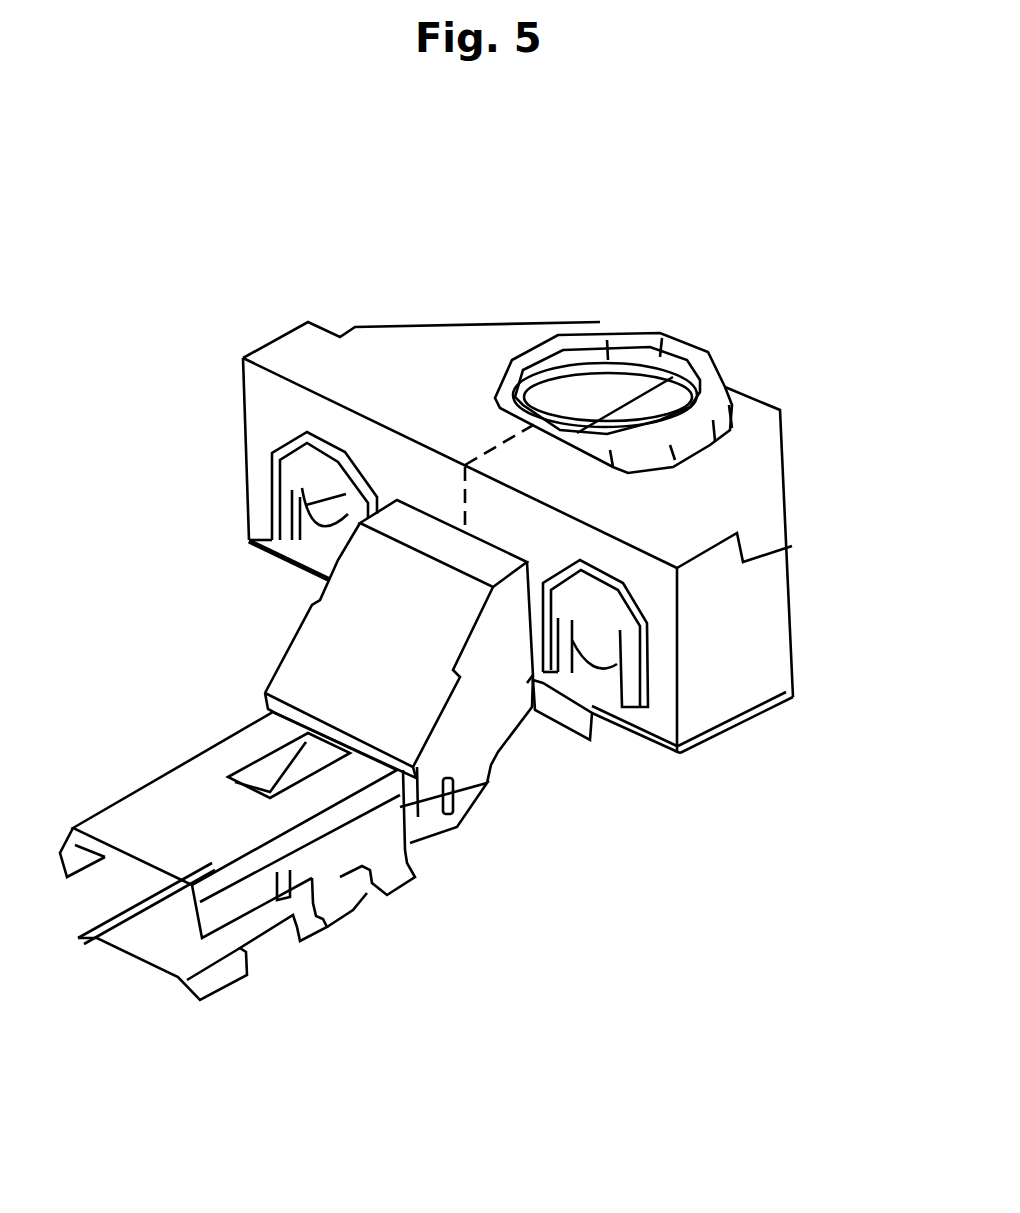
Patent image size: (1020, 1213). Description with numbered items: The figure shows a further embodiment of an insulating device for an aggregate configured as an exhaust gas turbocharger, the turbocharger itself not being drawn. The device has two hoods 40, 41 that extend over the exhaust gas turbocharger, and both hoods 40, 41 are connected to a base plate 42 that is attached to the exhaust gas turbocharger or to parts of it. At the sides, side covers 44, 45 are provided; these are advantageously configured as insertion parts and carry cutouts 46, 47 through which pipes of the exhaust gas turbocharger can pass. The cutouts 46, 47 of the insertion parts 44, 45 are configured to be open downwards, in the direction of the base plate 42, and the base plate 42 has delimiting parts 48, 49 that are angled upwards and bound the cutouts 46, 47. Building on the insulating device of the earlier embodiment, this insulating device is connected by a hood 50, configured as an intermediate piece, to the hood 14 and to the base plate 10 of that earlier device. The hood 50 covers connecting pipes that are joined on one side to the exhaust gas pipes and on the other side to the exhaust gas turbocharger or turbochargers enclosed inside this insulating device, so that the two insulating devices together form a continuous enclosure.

The base plate 10 is at (200, 972).
The hood 14 is at (157, 802).
The hood 40 is at (380, 318).
The hood 41 is at (750, 438).
The base plate 42 is at (647, 740).
The side cover 44 is at (272, 422).
The side cover 45 is at (632, 572).
The cutout 46 is at (262, 553).
The cutout 47 is at (593, 648).
The delimiting part 48 is at (322, 563).
The delimiting part 49 is at (594, 686).
The hood 50 is at (428, 786).